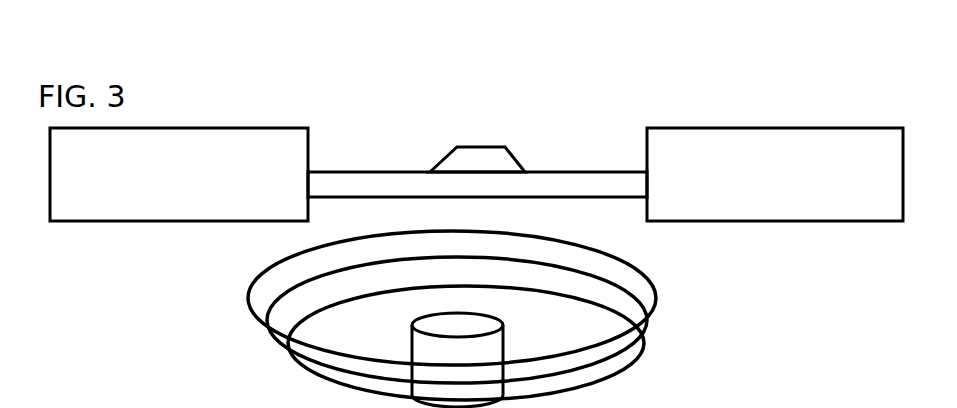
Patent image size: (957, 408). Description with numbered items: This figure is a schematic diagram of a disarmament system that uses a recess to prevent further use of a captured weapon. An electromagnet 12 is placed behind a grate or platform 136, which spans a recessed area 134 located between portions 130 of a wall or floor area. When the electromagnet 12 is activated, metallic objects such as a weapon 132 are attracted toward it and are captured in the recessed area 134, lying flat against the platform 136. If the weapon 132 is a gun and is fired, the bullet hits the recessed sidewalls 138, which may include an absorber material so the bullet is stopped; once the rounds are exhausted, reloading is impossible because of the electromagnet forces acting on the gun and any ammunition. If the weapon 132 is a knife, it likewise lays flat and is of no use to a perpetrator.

The electromagnet 12 is at (673, 308).
The portions of a wall or floor area 130 is at (192, 143).
The weapon 132 is at (488, 162).
The recessed area 134 is at (536, 145).
The grate or platform 136 is at (585, 175).
The recessed sidewalls 138 is at (315, 153).